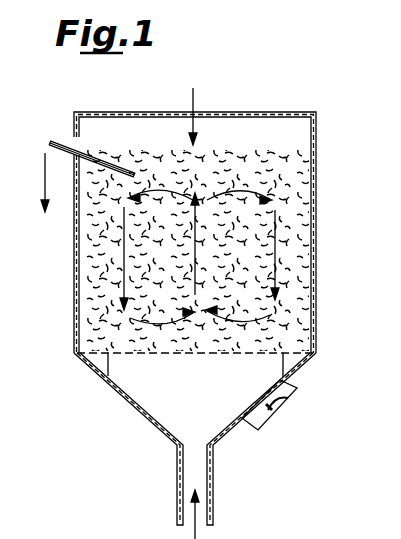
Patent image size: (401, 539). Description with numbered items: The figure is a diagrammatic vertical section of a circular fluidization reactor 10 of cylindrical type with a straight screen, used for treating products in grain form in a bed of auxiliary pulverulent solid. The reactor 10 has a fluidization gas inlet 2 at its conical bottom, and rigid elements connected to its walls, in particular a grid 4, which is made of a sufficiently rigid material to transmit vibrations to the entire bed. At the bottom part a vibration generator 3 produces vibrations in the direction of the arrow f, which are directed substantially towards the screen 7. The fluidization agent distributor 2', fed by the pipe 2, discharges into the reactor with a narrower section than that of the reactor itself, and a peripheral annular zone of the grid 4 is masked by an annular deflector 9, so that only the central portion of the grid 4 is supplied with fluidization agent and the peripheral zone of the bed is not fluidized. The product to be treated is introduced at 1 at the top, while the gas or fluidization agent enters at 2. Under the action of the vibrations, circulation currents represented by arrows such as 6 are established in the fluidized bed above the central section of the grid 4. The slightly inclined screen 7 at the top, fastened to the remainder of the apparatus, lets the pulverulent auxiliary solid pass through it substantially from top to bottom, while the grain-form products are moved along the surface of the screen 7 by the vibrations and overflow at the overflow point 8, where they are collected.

The product introduction point 1 is at (194, 102).
The fluidization gas inlet 2 is at (160, 514).
The fluidization agent distributor 2' is at (195, 439).
The vibration generator 3 is at (268, 427).
The grid 4 is at (135, 353).
The circulation currents 6 is at (275, 261).
The screen 7 is at (95, 158).
The overflow point 8 is at (45, 199).
The annular deflector 9 is at (102, 362).
The fluidization reactor 10 is at (316, 195).
The vibration direction arrow f is at (290, 400).